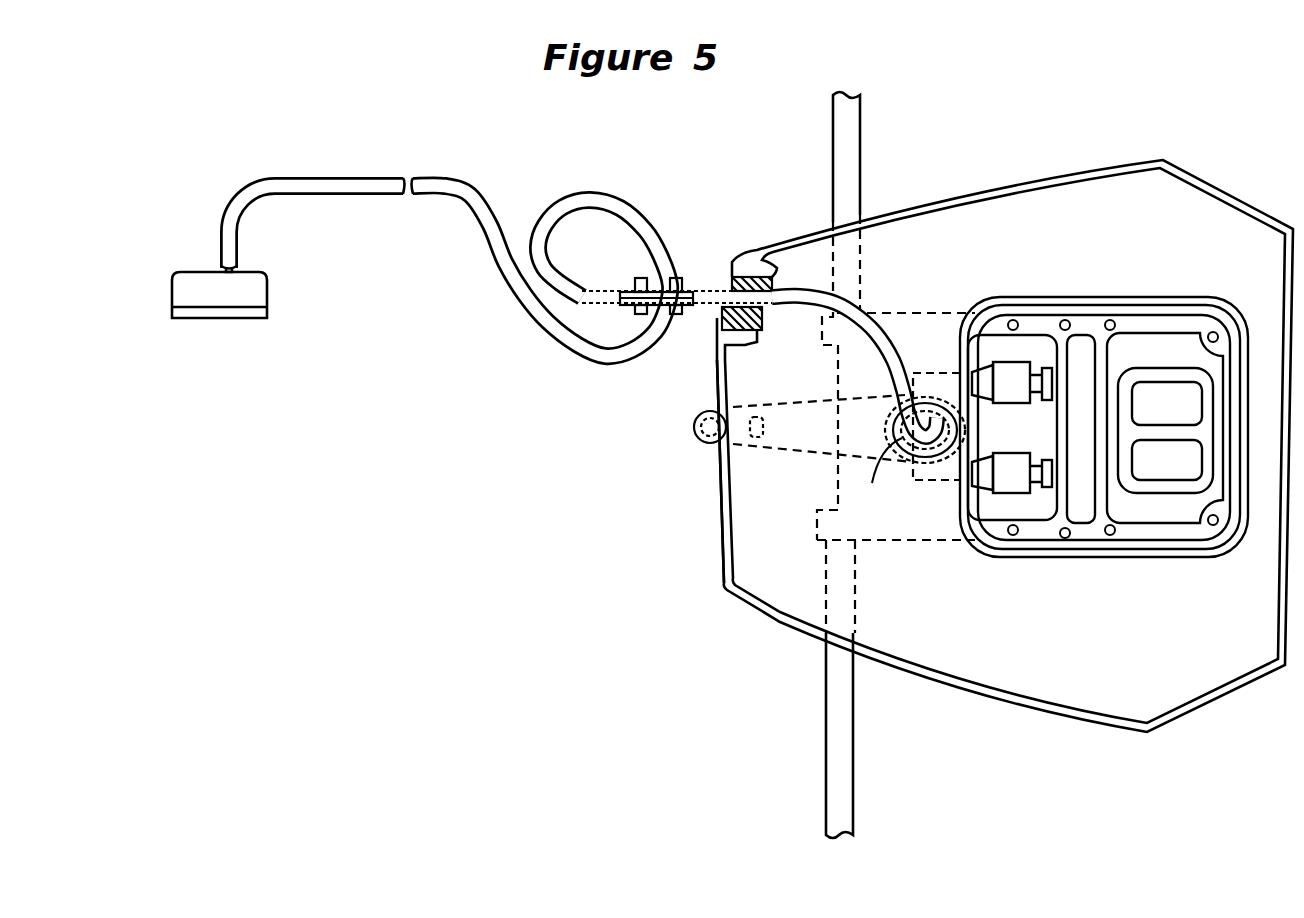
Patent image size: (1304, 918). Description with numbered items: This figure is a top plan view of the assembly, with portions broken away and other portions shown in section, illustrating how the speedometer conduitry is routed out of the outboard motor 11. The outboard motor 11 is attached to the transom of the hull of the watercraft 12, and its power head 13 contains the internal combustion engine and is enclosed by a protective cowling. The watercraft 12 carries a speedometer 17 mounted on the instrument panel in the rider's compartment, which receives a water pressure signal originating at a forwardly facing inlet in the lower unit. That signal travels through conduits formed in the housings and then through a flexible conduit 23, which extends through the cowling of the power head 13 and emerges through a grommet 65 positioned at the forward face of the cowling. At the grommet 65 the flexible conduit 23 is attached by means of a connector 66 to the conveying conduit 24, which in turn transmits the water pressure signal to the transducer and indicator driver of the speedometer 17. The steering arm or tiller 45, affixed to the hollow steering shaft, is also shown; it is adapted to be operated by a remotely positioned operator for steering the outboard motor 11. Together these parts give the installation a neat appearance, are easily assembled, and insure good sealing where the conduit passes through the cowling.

The outboard motor 11 is at (1040, 160).
The watercraft 12 is at (812, 700).
The power head 13 is at (708, 543).
The speedometer 17 is at (220, 322).
The flexible conduit 23 is at (870, 333).
The conveying conduit 24 is at (493, 292).
The steering arm or tiller 45 is at (693, 425).
The grommet 65 is at (718, 320).
The connector 66 is at (657, 287).